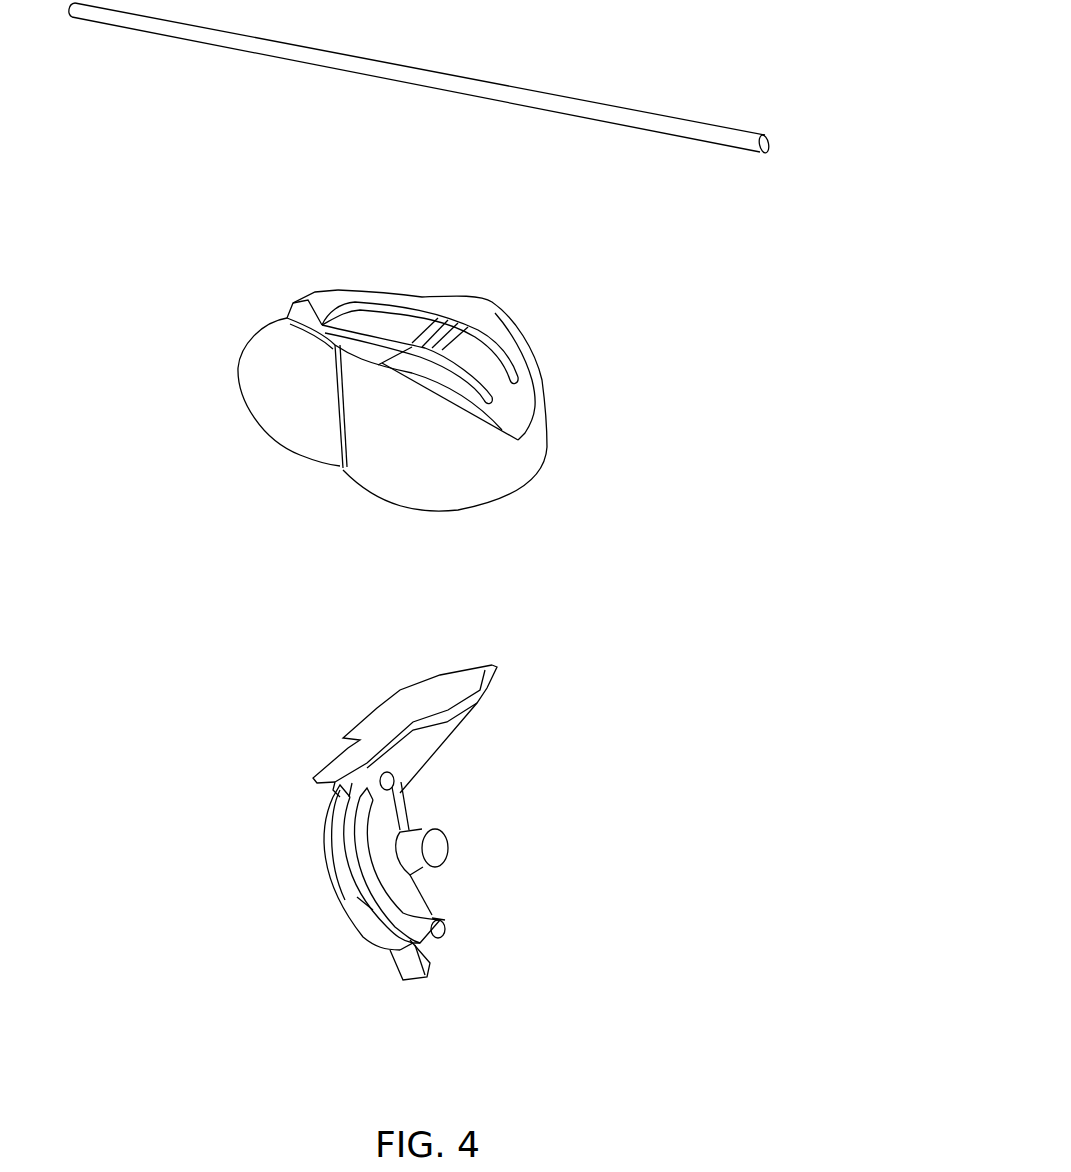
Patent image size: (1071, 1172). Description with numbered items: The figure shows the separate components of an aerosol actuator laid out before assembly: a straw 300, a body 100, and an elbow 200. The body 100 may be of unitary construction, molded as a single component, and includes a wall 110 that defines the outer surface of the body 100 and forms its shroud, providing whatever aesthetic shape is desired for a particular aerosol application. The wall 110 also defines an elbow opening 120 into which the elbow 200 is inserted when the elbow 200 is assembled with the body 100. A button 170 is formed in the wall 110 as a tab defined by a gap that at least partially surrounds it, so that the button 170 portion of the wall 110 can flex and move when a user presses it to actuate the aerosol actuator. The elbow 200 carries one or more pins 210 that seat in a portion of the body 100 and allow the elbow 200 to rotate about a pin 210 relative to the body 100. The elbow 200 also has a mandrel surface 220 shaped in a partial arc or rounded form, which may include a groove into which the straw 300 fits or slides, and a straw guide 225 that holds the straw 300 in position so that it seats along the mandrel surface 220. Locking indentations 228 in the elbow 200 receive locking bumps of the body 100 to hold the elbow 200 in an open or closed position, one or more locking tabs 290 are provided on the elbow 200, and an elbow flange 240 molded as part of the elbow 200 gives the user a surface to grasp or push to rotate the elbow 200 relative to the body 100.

The straw 300 is at (603, 77).
The body 100 is at (392, 373).
The wall 110 is at (405, 453).
The elbow opening 120 is at (250, 298).
The button 170 is at (388, 322).
The elbow 200 is at (453, 788).
The elbow flange 240 is at (430, 698).
The mandrel surface 220 is at (350, 897).
The straw guide 225 is at (315, 814).
The pin 210 is at (435, 848).
The locking indentation 228 is at (392, 786).
The locking tab 290 is at (413, 967).